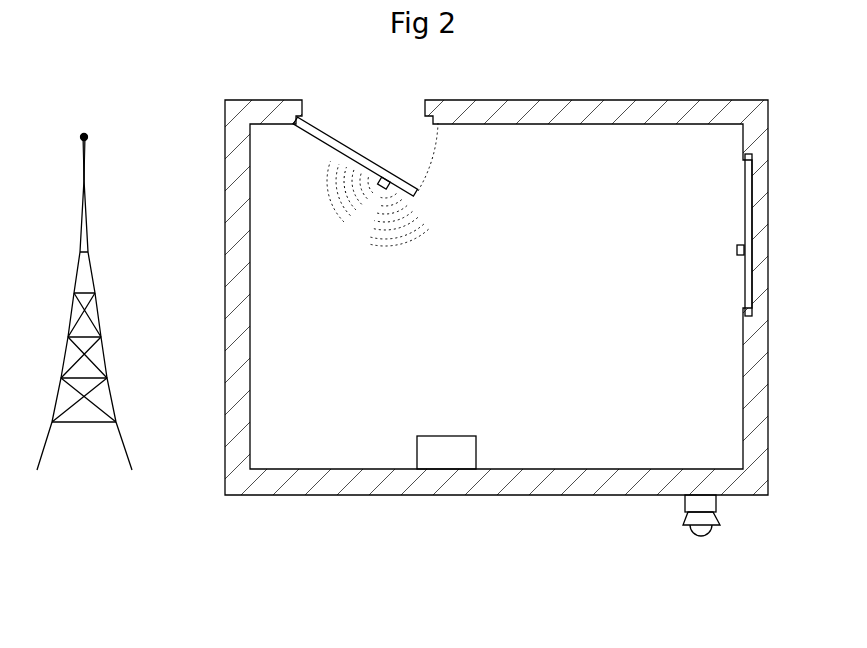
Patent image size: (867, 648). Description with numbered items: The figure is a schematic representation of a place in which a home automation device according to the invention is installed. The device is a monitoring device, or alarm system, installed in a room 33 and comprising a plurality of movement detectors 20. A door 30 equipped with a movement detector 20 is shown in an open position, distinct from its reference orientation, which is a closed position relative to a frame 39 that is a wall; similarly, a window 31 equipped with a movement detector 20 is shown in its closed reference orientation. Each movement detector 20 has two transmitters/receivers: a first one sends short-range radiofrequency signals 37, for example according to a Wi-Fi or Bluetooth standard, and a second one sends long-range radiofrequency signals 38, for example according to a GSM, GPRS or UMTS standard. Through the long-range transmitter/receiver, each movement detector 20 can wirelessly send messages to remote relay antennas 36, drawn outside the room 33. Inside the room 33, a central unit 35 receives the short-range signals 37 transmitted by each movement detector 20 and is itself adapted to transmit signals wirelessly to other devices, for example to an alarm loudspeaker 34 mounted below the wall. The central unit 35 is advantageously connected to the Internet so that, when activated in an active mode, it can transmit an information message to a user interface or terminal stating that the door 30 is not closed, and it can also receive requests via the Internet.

The movement detector 20 is at (388, 177).
The door 30 is at (339, 147).
The window 31 is at (753, 213).
The room 33 is at (320, 384).
The alarm loudspeaker 34 is at (688, 505).
The central unit 35 is at (444, 458).
The remote relay antenna 36 is at (120, 326).
The short-range radiofrequency signal 37 is at (367, 257).
The long-range radiofrequency signal 38 is at (317, 200).
The frame 39 is at (623, 110).